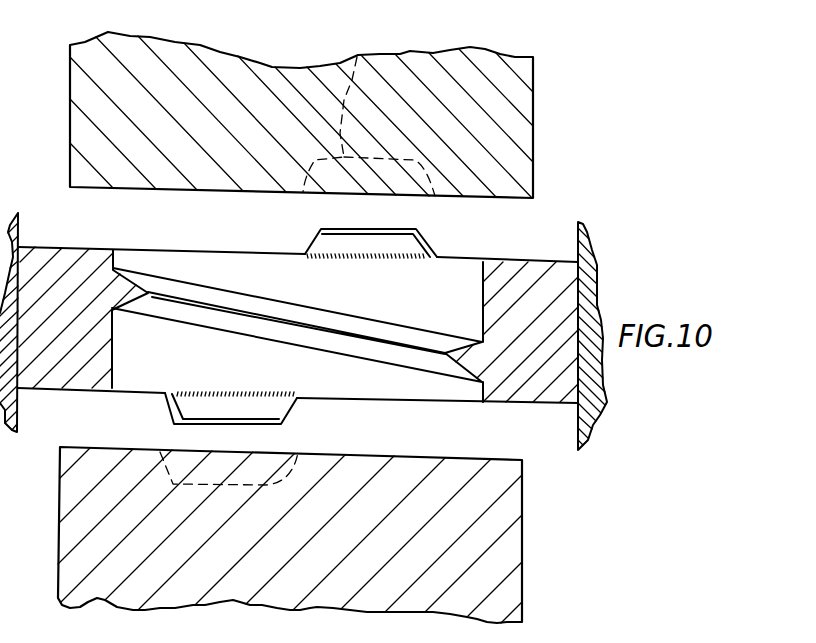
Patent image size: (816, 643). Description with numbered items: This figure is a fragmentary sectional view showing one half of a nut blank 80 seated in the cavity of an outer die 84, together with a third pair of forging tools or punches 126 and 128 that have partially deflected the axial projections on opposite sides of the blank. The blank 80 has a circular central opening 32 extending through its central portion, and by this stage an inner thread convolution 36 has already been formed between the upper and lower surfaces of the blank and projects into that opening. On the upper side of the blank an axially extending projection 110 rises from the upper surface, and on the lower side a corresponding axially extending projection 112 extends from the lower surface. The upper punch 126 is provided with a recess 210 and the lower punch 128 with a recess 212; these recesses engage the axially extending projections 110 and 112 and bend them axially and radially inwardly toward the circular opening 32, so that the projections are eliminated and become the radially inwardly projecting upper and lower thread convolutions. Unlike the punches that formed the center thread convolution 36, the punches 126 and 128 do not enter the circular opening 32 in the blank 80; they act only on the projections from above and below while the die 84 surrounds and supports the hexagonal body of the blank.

The blank 80 is at (53, 240).
The circular central opening 32 is at (464, 277).
The inner thread convolution 36 is at (212, 334).
The outer die 84 is at (600, 411).
The axial projection 110 is at (300, 242).
The axial projection 112 is at (158, 404).
The punch 126 is at (515, 123).
The punch 128 is at (508, 550).
The recess 210 is at (357, 56).
The recess 212 is at (263, 487).